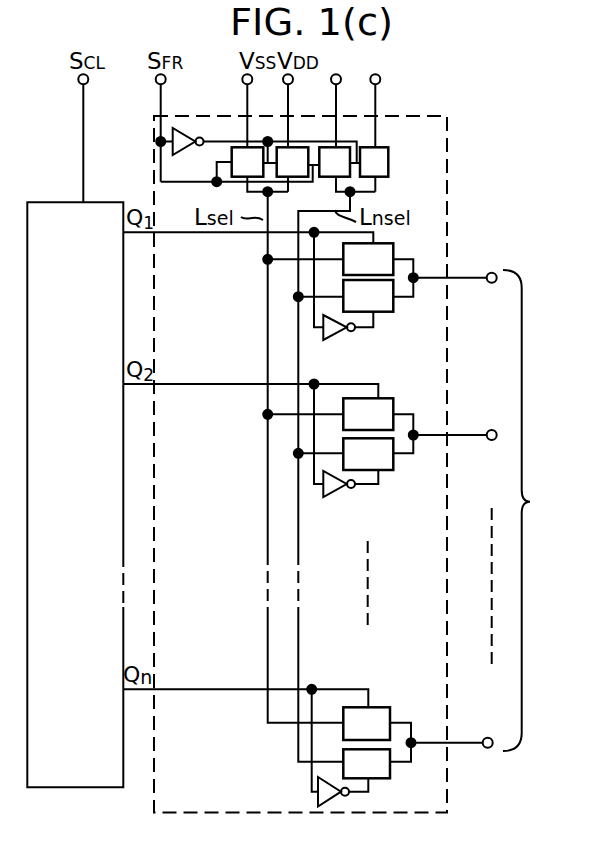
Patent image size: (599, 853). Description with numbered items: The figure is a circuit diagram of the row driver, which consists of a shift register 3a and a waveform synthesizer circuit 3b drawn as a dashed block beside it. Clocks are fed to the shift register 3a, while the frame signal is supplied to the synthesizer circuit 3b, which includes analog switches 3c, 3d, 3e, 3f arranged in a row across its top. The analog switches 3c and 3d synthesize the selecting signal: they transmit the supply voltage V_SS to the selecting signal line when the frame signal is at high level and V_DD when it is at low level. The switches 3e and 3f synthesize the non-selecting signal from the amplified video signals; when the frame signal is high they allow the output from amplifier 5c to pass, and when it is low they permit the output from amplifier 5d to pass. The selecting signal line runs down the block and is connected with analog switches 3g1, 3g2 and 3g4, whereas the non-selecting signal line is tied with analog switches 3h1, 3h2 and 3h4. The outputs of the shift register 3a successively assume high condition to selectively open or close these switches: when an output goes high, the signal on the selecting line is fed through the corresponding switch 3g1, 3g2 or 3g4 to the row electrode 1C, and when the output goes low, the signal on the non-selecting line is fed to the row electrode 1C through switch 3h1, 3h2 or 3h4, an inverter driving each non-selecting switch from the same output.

The shift register 3a is at (105, 202).
The waveform synthesizer circuit 3b is at (422, 116).
The analog switch 3c is at (248, 161).
The analog switch 3d is at (293, 161).
The analog switch 3e is at (334, 161).
The analog switch 3f is at (374, 161).
The analog switch 3g1 is at (368, 259).
The analog switch 3h1 is at (368, 296).
The analog switch 3g2 is at (368, 414).
The analog switch 3h2 is at (368, 454).
The analog switch 3g4 is at (366, 723).
The analog switch 3h4 is at (366, 764).
The amplifier 5c is at (336, 97).
The amplifier 5d is at (375, 120).
The row electrode 1C is at (485, 510).